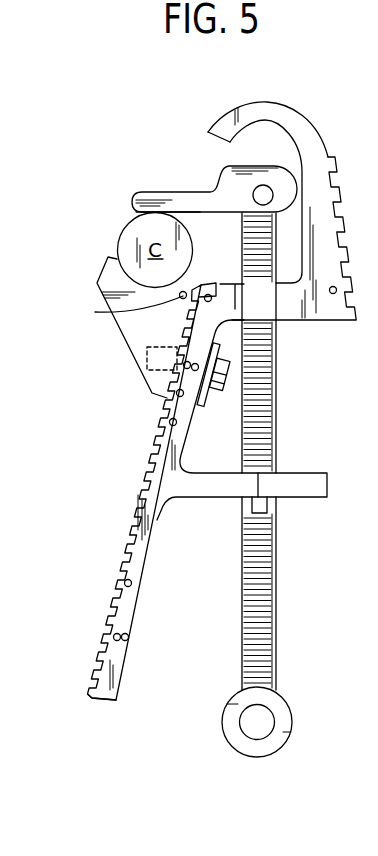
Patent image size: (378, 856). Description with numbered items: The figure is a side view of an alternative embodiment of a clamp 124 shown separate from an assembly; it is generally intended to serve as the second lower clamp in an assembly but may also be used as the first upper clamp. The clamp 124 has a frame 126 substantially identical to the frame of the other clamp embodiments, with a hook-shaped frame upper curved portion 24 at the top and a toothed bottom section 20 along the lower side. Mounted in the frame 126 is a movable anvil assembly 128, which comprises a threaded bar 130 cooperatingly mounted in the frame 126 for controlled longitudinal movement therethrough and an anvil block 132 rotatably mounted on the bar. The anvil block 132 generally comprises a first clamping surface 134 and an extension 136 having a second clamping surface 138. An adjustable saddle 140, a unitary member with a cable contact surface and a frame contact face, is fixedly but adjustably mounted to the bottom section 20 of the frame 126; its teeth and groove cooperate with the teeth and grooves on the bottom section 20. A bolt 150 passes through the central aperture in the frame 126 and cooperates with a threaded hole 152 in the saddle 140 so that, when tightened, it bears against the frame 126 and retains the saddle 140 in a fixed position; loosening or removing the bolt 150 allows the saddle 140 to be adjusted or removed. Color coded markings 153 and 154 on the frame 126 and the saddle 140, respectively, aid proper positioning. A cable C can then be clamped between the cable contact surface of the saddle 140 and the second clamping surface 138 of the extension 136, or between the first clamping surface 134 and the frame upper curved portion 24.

The bottom section 20 is at (108, 617).
The frame upper curved portion 24 is at (306, 117).
The clamp 124 is at (117, 437).
The frame 126 is at (120, 690).
The movable anvil assembly 128 is at (277, 606).
The threaded bar 130 is at (277, 541).
The anvil block 132 is at (162, 190).
The first clamping surface 134 is at (258, 162).
The extension 136 is at (131, 199).
The second clamping surface 138 is at (127, 219).
The adjustable saddle 140 is at (102, 278).
The bolt 150 is at (202, 405).
The threaded hole 152 is at (147, 357).
The color coded marking 153 is at (216, 283).
The color coded marking 154 is at (95, 312).